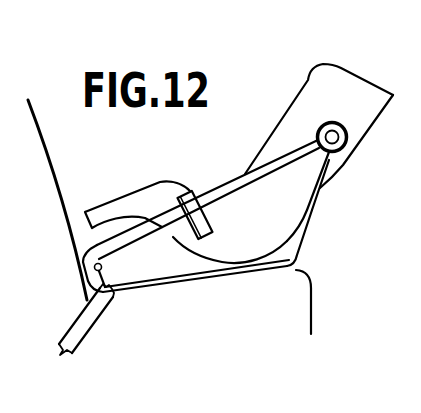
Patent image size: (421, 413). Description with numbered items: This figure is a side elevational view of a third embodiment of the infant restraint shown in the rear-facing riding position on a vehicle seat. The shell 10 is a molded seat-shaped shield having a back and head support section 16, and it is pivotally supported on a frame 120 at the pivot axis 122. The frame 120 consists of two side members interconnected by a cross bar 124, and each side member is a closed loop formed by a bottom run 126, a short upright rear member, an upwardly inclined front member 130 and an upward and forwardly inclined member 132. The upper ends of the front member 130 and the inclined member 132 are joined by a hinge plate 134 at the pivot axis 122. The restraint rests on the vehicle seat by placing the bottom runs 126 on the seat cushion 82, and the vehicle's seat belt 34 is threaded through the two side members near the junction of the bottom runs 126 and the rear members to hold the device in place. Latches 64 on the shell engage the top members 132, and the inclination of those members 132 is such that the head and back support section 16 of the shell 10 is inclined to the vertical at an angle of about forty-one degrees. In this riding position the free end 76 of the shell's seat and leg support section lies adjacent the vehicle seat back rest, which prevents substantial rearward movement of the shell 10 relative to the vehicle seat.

The shell 10 is at (358, 70).
The back and head support section 16 is at (347, 162).
The seat belt 34 is at (107, 312).
The latches 64 is at (217, 211).
The free end 76 is at (35, 115).
The seat cushion 82 is at (278, 287).
The frame 120 is at (313, 223).
The pivot axis 122 is at (340, 133).
The cross bar 124 is at (102, 266).
The bottom run 126 is at (208, 274).
The upwardly inclined front member 130 is at (307, 242).
The upward and forwardly inclined member 132 is at (229, 176).
The hinge plate 134 is at (323, 122).